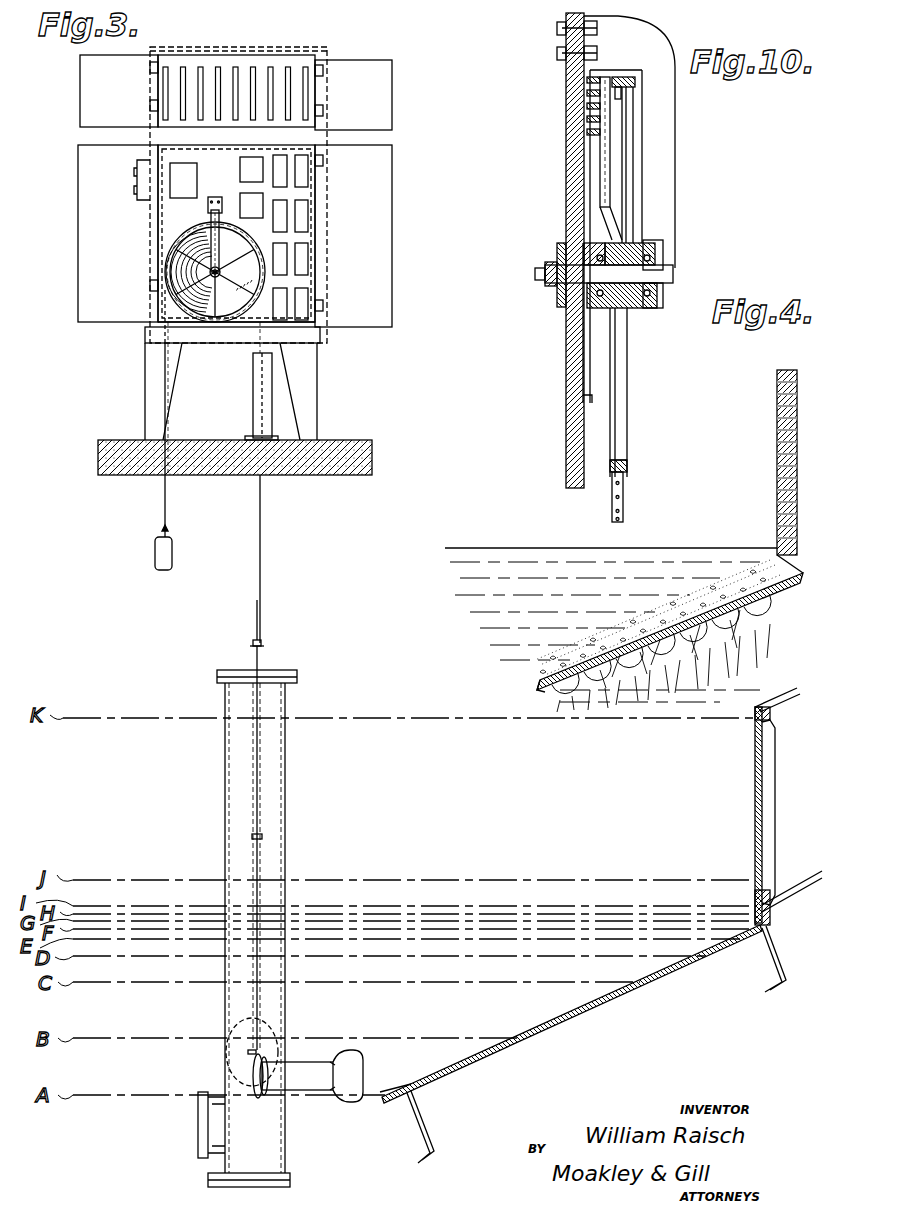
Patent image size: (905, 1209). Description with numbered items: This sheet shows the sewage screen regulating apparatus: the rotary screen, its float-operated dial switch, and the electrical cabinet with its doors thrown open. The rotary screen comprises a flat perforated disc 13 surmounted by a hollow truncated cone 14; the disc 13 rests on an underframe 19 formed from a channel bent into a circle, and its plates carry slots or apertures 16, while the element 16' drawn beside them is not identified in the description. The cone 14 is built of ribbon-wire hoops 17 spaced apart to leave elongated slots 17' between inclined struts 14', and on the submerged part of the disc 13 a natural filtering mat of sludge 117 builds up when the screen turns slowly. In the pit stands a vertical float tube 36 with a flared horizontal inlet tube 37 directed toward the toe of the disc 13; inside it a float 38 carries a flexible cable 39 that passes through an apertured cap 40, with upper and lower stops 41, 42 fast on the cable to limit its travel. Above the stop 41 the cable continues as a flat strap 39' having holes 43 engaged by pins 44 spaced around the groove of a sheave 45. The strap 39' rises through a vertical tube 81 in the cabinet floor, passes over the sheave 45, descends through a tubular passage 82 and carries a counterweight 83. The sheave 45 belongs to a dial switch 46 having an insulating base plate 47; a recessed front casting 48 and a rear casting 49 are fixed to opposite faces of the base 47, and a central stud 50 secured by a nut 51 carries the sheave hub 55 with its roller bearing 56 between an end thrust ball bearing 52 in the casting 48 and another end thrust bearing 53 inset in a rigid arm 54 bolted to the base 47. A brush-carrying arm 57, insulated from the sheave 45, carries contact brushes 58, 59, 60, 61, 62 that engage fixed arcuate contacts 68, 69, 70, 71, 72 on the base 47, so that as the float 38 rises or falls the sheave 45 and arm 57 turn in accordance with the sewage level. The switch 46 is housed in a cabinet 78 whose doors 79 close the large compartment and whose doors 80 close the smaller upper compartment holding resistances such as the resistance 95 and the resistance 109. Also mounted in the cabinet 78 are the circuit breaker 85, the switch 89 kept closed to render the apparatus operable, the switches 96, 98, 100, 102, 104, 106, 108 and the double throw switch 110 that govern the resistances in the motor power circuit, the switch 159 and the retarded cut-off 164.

In FIG. 4, the disc 13 is at (530, 682).
In FIG. 4, the cone 14 is at (760, 647).
In FIG. 4, the inclined struts 14' is at (790, 812).
In FIG. 4, the slots or apertures 16 is at (573, 849).
In FIG. 4, the grate bar end 16' is at (518, 695).
In FIG. 4, the hoops 17 is at (769, 402).
In FIG. 4, the elongated slots 17' is at (748, 628).
In FIG. 4, the underframe 19 is at (412, 1132).
In FIG. 4, the float tube 36 is at (225, 778).
In FIG. 4, the inlet tube 37 is at (315, 1082).
In FIG. 4, the float 38 is at (280, 1021).
In FIG. 4, the flexible cable 39 is at (286, 848).
In FIG. 3, the flat strap 39' is at (216, 466).
In FIG. 10, the flat strap 39' is at (596, 517).
In FIG. 4, the cap 40 is at (229, 668).
In FIG. 4, the upper stop 41 is at (262, 642).
In FIG. 4, the lower stop 42 is at (262, 835).
In FIG. 10, the holes 43 is at (612, 490).
In FIG. 10, the pins 44 is at (624, 475).
In FIG. 3, the sheave 45 is at (196, 330).
In FIG. 10, the sheave 45 is at (628, 185).
In FIG. 3, the dial switch 46 is at (165, 242).
In FIG. 10, the dial switch 46 is at (678, 238).
In FIG. 3, the base plate 47 is at (160, 216).
In FIG. 10, the base plate 47 is at (566, 366).
In FIG. 10, the recessed casting 48 is at (590, 320).
In FIG. 10, the casting 49 is at (557, 256).
In FIG. 3, the central stud 50 is at (189, 272).
In FIG. 10, the central stud 50 is at (566, 283).
In FIG. 10, the nut 51 is at (540, 282).
In FIG. 10, the end thrust ball bearing 52 is at (590, 240).
In FIG. 10, the end thrust bearing 53 is at (655, 300).
In FIG. 3, the rigid arm 54 is at (208, 207).
In FIG. 10, the rigid arm 54 is at (675, 208).
In FIG. 10, the hub 55 is at (628, 308).
In FIG. 10, the roller bearing 56 is at (618, 308).
In FIG. 3, the brush-carrying arm 57 is at (244, 282).
In FIG. 10, the brush-carrying arm 57 is at (608, 162).
In FIG. 10, the contact brush 58 is at (600, 78).
In FIG. 10, the contact brush 59 is at (618, 77).
In FIG. 10, the contact brush 60 is at (600, 105).
In FIG. 10, the contact brush 61 is at (600, 118).
In FIG. 10, the contact brush 62 is at (600, 131).
In FIG. 10, the fixed current supply contact 68 is at (587, 79).
In FIG. 10, the fixed arcuate contact 69 is at (587, 92).
In FIG. 10, the fixed arcuate contact 70 is at (587, 105).
In FIG. 10, the fixed arcuate contact 71 is at (587, 118).
In FIG. 10, the fixed arcuate contact 72 is at (587, 131).
In FIG. 3, the cabinet 78 is at (272, 46).
In FIG. 3, the doors 79 is at (78, 250).
In FIG. 3, the doors 80 is at (92, 88).
In FIG. 3, the vertically arranged tube 81 is at (253, 410).
In FIG. 3, the tubular passage 82 is at (142, 478).
In FIG. 3, the counterweight 83 is at (155, 556).
In FIG. 3, the circuit breaker 85 is at (183, 180).
In FIG. 3, the switch 89 is at (136, 180).
In FIG. 3, the resistance 95 is at (308, 91).
In FIG. 3, the switch 96 is at (280, 163).
In FIG. 3, the switch 98 is at (300, 180).
In FIG. 3, the switch 100 is at (280, 207).
In FIG. 3, the switch 102 is at (302, 220).
In FIG. 3, the switch 104 is at (280, 250).
In FIG. 3, the switch 106 is at (302, 265).
In FIG. 3, the switch 108 is at (280, 295).
In FIG. 3, the double throw switch 110 is at (302, 310).
In FIG. 3, the resistance 109 is at (166, 90).
In FIG. 4, the sludge mat 117 is at (650, 590).
In FIG. 3, the switch 159 is at (252, 169).
In FIG. 3, the retarded cut-off 164 is at (252, 205).